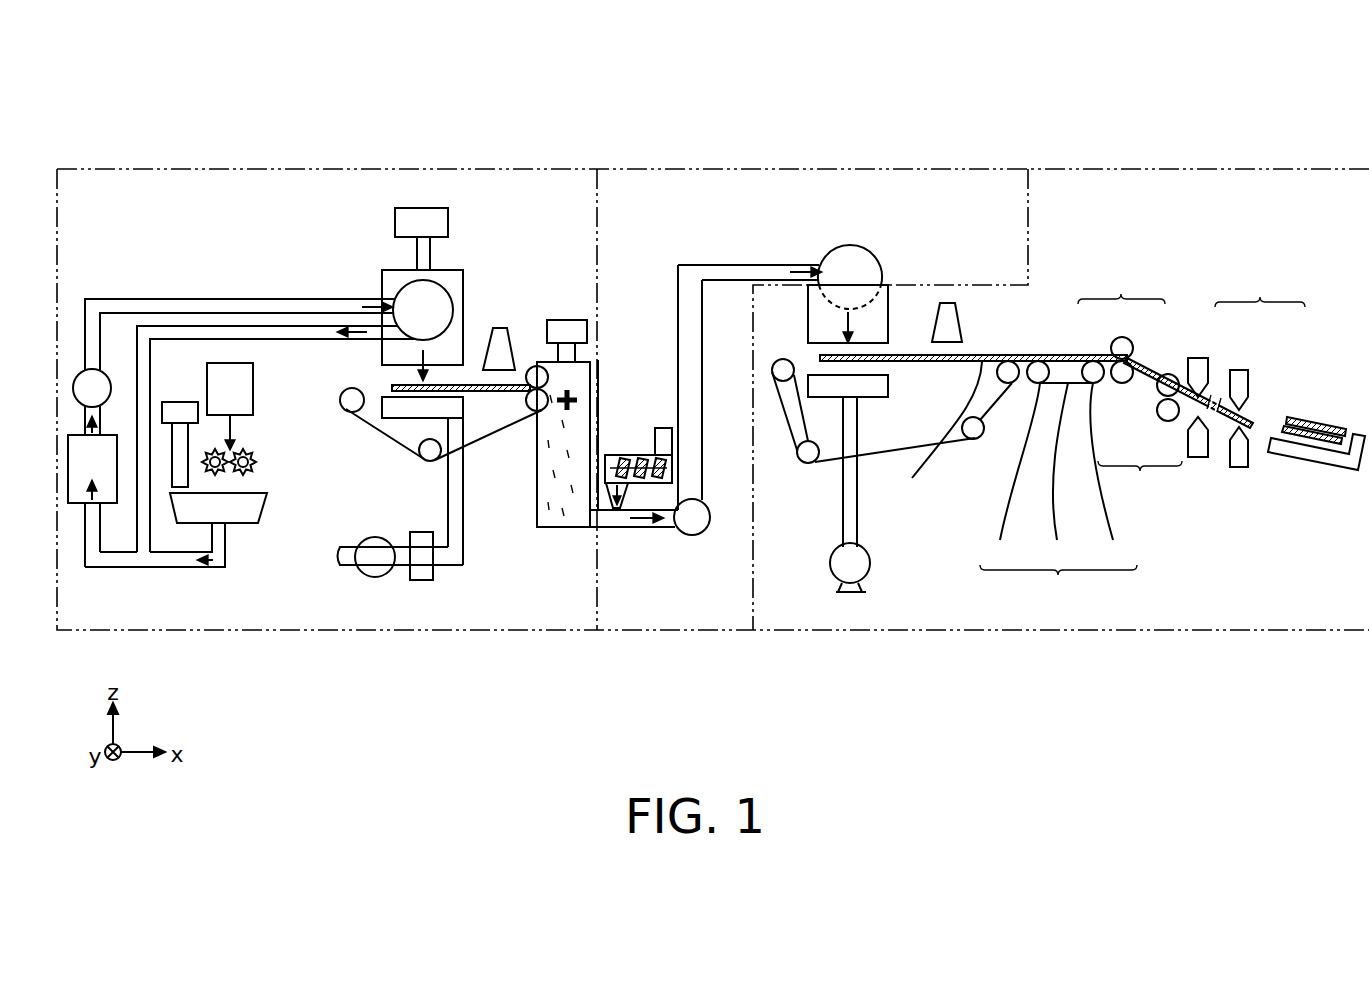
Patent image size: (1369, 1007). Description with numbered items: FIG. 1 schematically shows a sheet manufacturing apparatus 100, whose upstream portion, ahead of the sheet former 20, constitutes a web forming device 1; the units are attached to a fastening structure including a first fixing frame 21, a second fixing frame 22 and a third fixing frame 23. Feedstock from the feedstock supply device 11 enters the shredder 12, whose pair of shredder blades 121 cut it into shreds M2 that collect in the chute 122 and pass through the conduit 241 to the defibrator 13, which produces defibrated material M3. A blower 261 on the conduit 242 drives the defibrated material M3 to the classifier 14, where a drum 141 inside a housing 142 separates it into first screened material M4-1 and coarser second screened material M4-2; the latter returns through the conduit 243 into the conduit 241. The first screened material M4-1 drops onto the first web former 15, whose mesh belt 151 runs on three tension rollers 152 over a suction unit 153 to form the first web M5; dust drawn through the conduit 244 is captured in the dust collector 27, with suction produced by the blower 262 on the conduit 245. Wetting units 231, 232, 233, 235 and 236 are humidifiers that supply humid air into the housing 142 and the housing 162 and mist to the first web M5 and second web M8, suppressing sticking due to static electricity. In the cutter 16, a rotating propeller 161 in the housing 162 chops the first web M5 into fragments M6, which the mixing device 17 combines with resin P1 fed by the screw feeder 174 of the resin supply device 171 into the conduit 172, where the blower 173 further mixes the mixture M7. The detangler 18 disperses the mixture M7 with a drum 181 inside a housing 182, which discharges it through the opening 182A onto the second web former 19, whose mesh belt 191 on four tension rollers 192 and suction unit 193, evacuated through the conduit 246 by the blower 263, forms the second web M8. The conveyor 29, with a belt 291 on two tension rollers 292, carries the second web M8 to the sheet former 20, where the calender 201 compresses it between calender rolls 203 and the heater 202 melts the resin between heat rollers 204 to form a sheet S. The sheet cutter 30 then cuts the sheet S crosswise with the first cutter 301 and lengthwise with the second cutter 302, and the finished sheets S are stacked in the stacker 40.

The sheet manufacturing apparatus 100 is at (1300, 68).
The web forming device 1 is at (1072, 158).
The third fixing frame 23 is at (292, 168).
The first fixing frame 21 is at (859, 168).
The second fixing frame 22 is at (980, 632).
The feedstock supply device 11 is at (237, 425).
The shredder 12 is at (268, 456).
The shredder blades 121 is at (218, 479).
The chute 122 is at (255, 509).
The defibrator 13 is at (68, 472).
The classifier 14 is at (478, 268).
The drum 141 is at (448, 286).
The housing 142 is at (453, 268).
The first web former 15 is at (473, 460).
The mesh belt 151 is at (463, 449).
The tension rollers 152 is at (427, 463).
The suction unit 153 is at (463, 404).
The cutter 16 is at (595, 367).
The propeller 161 is at (591, 388).
The housing 162 is at (548, 528).
The mixing device 17 is at (670, 554).
The resin supply device 171 is at (647, 448).
The conduit 172 is at (703, 463).
The blower 173 is at (700, 538).
The screw feeder 174 is at (654, 444).
The detangler 18 is at (924, 231).
The drum 181 is at (858, 249).
The housing 182 is at (901, 287).
The opening 182A is at (808, 350).
The second web former 19 is at (948, 458).
The mesh belt 191 is at (954, 429).
The tension rollers 192 is at (974, 438).
The suction unit 193 is at (888, 389).
The sheet former 20 is at (1173, 332).
The calender 201 is at (1121, 287).
The heater 202 is at (1140, 477).
The calender rolls 203 is at (1134, 362).
The heat rollers 204 is at (1167, 421).
The wetting unit 231 is at (181, 402).
The wetting unit 232 is at (422, 208).
The wetting unit 233 is at (570, 320).
The wetting unit 235 is at (503, 329).
The wetting unit 236 is at (960, 314).
The conduit 241 is at (125, 567).
The conduit 242 is at (133, 299).
The conduit 243 is at (203, 326).
The conduit 244 is at (465, 528).
The conduit 245 is at (401, 570).
The conduit 246 is at (857, 528).
The blower 261 is at (75, 385).
The blower 262 is at (370, 580).
The blower 263 is at (871, 565).
The dust collector 27 is at (429, 581).
The conveyor 29 is at (1058, 584).
The belt 291 is at (1058, 474).
The tension rollers 292 is at (1058, 474).
The sheet cutter 30 is at (1260, 289).
The first cutter 301 is at (1215, 353).
The second cutter 302 is at (1257, 358).
The stacker 40 is at (1330, 462).
The sheet S is at (1288, 444).
The resin P1 is at (627, 490).
The shreds M2 is at (216, 544).
The defibrated material M3 is at (87, 426).
The first screened material M4-1 is at (413, 360).
The second screened material M4-2 is at (353, 328).
The first web M5 is at (523, 376).
The fragments M6 is at (558, 512).
The mixture M7 is at (645, 526).
The second web M8 is at (915, 353).